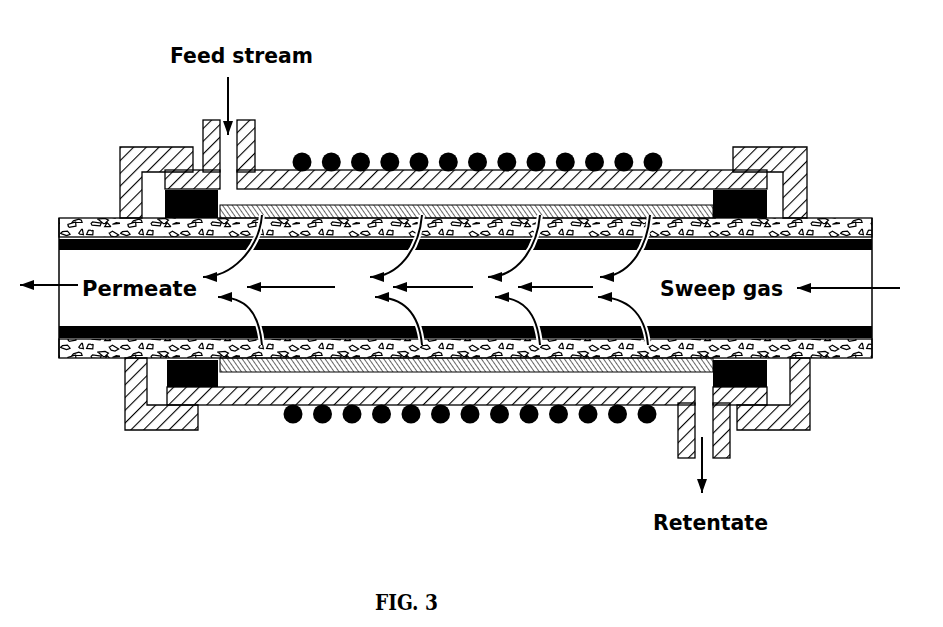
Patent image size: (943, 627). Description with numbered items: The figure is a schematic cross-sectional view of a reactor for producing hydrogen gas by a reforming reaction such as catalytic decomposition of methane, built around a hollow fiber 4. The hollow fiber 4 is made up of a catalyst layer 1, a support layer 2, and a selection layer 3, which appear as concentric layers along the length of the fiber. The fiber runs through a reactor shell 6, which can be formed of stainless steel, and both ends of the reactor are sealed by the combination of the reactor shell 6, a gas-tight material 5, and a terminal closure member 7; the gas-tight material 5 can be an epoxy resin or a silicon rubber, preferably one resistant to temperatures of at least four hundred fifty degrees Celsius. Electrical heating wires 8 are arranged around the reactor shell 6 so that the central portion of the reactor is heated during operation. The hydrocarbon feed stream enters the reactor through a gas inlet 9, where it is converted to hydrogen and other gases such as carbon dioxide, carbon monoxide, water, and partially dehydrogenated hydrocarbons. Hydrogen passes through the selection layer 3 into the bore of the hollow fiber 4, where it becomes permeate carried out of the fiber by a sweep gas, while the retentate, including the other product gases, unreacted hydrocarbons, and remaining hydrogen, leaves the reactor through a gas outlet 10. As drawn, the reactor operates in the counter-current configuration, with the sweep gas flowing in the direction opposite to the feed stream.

The catalyst layer 1 is at (300, 207).
The support layer 2 is at (328, 230).
The selection layer 3 is at (362, 243).
The hollow fiber 4 is at (388, 257).
The gas-tight material 5 is at (728, 207).
The reactor shell 6 is at (678, 170).
The terminal closure member 7 is at (803, 148).
The electrical heating wires 8 is at (455, 154).
The gas inlet 9 is at (216, 138).
The gas outlet 10 is at (700, 430).